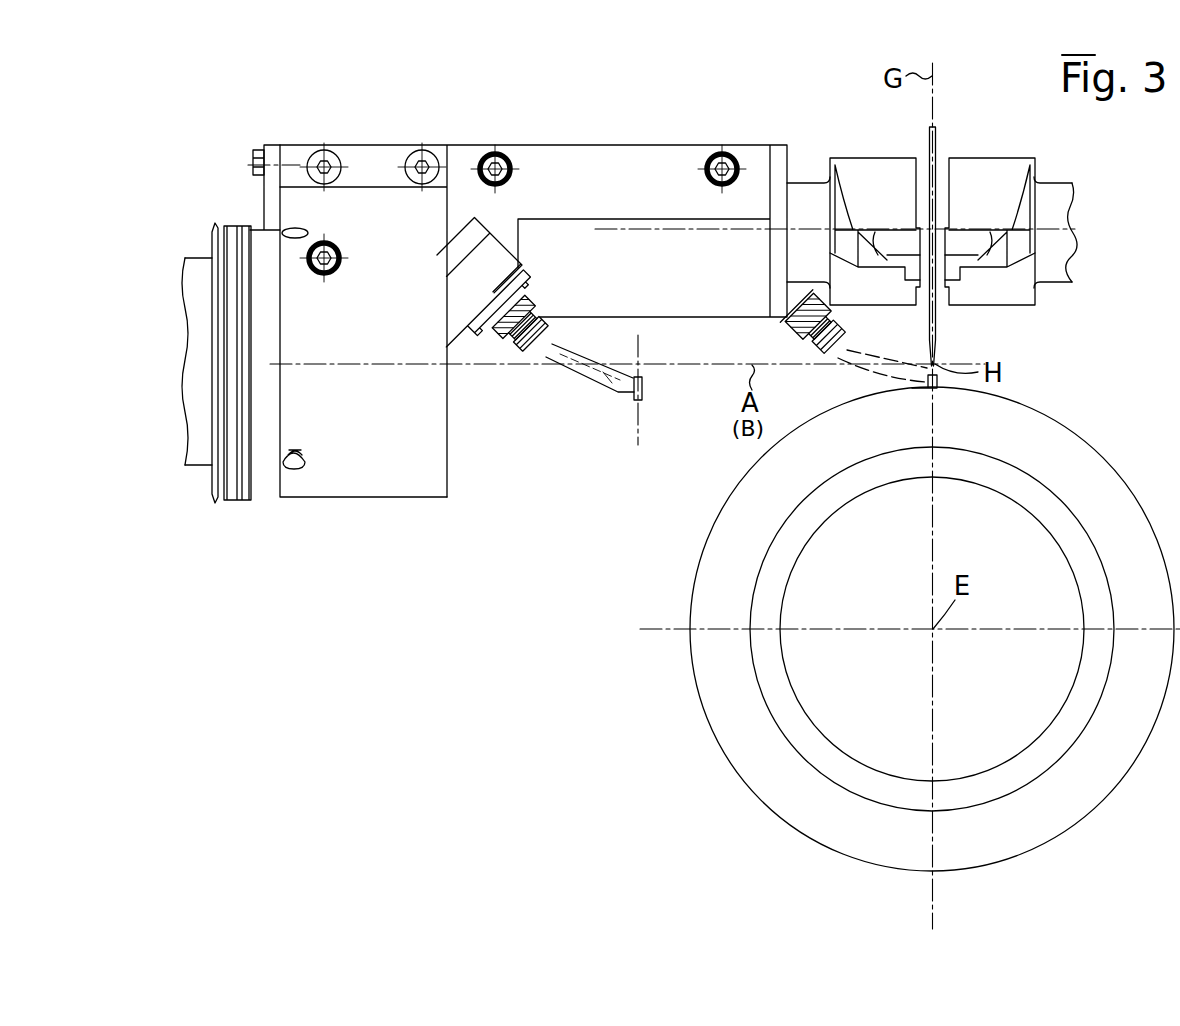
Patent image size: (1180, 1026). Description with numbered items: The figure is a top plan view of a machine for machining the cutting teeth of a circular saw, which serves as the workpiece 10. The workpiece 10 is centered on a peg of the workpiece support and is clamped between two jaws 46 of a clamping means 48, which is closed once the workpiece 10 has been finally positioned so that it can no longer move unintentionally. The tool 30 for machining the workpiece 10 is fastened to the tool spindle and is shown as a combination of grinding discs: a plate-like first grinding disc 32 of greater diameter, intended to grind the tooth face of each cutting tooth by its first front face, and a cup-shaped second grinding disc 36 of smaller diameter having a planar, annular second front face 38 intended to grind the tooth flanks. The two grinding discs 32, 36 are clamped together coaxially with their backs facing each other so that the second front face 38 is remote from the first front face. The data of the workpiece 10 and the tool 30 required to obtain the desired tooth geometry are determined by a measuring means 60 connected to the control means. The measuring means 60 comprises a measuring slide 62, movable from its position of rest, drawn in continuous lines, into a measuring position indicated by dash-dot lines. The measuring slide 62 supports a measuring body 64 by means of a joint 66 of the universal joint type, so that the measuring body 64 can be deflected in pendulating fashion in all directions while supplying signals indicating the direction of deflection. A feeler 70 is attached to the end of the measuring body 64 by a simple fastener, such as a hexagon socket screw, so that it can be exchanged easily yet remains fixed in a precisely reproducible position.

The workpiece 10 is at (936, 142).
The tool 30 is at (869, 629).
The first grinding disc 32 is at (733, 737).
The second grinding disc 36 is at (806, 710).
The second front face 38 is at (869, 778).
The jaws 46 is at (872, 168).
The clamping means 48 is at (1025, 337).
The measuring means 60 is at (547, 366).
The measuring slide 62 is at (376, 497).
The measuring body 64 is at (581, 373).
The joint 66 is at (499, 323).
The feeler 70 is at (642, 390).